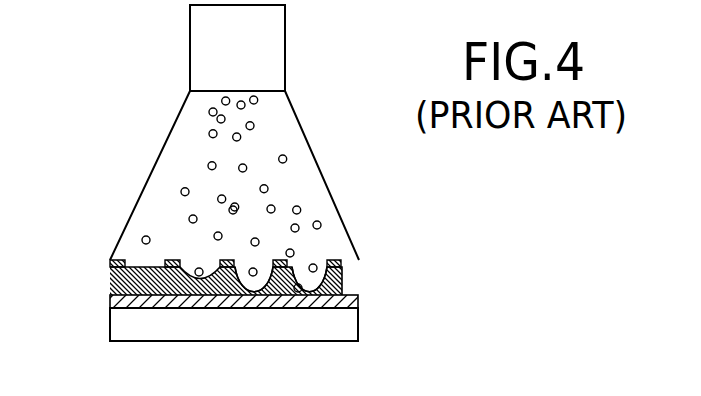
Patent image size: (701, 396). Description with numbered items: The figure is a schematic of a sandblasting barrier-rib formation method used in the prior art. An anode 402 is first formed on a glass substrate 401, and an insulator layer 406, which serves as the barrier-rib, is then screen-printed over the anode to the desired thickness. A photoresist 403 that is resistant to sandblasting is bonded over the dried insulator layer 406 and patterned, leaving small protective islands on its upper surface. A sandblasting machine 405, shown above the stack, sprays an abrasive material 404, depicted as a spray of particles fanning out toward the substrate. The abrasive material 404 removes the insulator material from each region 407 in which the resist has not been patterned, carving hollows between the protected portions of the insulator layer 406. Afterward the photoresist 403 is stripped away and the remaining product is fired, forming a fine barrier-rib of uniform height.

The glass substrate 401 is at (358, 332).
The anode 402 is at (358, 300).
The photoresist 403 is at (110, 262).
The abrasive material 404 is at (208, 163).
The sandblasting machine 405 is at (285, 38).
The insulator layer 406 is at (110, 287).
The region in which the resist has not been patterned 407 is at (298, 272).